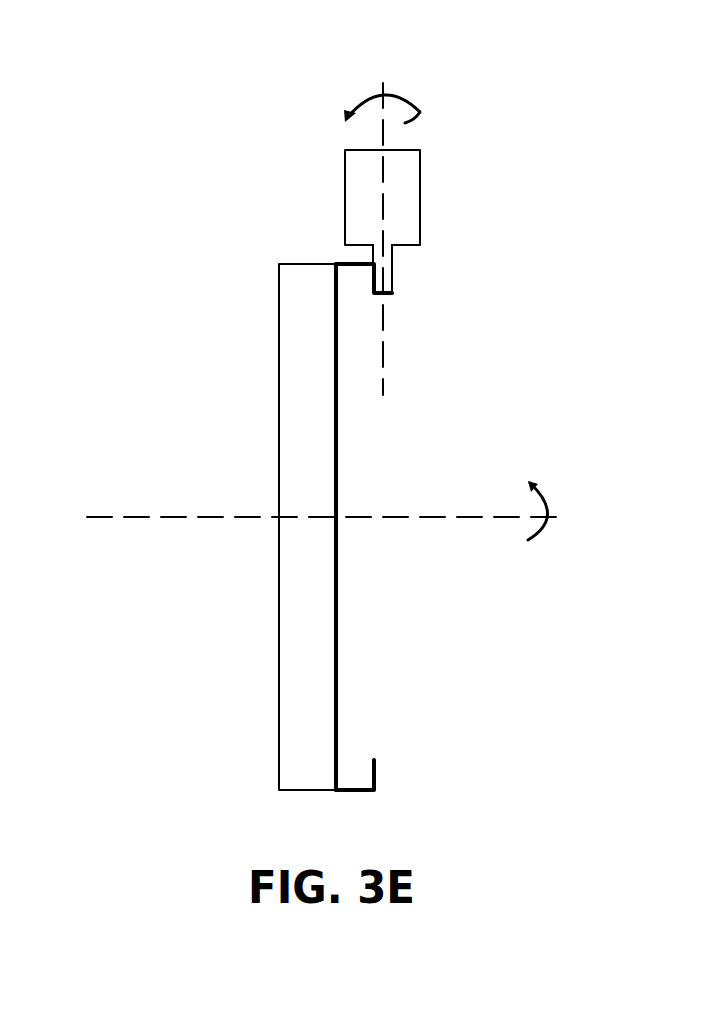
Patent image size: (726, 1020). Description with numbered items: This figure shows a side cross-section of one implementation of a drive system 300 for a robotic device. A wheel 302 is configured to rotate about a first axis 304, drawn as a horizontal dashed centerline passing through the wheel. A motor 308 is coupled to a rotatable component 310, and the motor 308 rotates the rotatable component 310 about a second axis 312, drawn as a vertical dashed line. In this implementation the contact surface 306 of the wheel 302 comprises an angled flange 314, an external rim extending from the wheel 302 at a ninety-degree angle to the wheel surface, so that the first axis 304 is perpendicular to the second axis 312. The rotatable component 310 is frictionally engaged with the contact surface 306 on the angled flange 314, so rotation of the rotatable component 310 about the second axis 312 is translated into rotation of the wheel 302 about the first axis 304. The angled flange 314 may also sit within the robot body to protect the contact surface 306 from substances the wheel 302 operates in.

The drive system 300 is at (515, 108).
The wheel 302 is at (297, 398).
The first axis 304 is at (135, 517).
The contact surface 306 is at (372, 278).
The motor 308 is at (345, 180).
The rotatable component 310 is at (395, 272).
The second axis 312 is at (385, 347).
The angled flange 314 is at (345, 262).